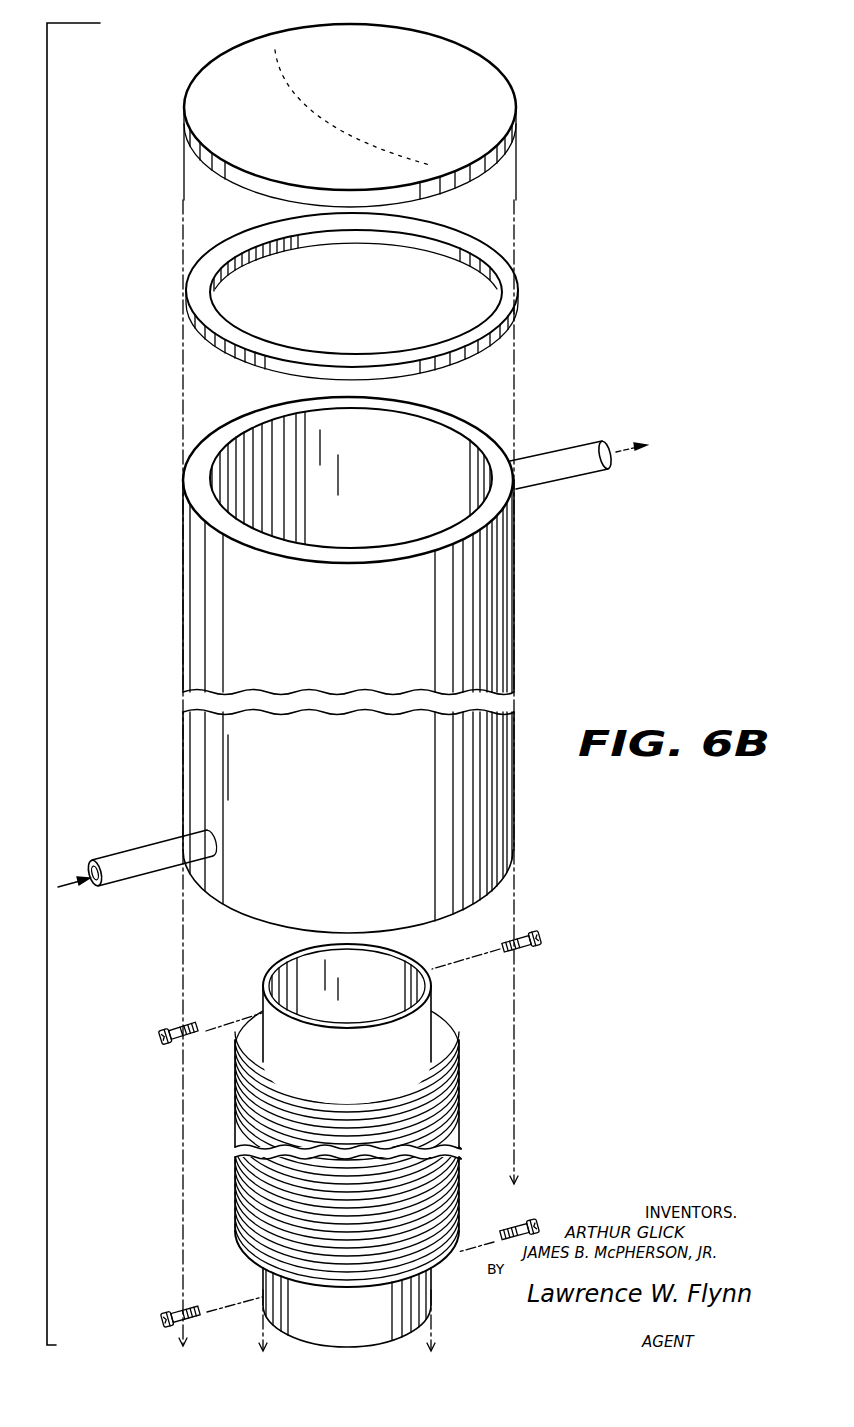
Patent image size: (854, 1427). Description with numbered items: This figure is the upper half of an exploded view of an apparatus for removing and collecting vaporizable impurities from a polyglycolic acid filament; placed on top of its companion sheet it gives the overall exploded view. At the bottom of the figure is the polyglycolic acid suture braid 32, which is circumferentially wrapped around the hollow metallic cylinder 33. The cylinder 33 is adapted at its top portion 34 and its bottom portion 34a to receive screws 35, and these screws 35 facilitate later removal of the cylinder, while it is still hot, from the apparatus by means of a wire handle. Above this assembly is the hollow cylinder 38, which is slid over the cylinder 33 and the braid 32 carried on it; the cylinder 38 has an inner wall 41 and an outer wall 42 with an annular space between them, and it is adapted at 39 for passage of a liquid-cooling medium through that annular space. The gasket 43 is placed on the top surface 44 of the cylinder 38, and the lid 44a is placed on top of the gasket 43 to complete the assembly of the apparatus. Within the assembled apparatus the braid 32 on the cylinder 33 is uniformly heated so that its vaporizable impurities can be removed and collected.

The lid 44a is at (416, 108).
The gasket 43 is at (505, 305).
The top surface 44 is at (246, 425).
The outer wall 42 is at (456, 422).
The inner wall 41 is at (452, 428).
The adaptation for passage of liquid-cooling medium 39 is at (551, 455).
The hollow cylinder 38 is at (182, 765).
The hollow metallic cylinder 33 is at (290, 960).
The top portion 34 is at (422, 966).
The polyglycolic acid suture braid 32 is at (245, 1104).
The bottom portion 34a is at (282, 1319).
The screws 35 is at (537, 935).